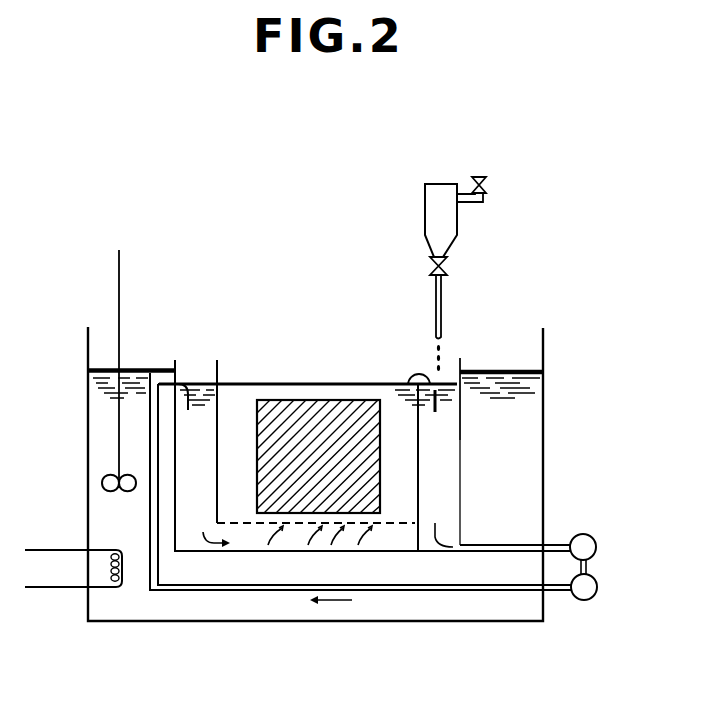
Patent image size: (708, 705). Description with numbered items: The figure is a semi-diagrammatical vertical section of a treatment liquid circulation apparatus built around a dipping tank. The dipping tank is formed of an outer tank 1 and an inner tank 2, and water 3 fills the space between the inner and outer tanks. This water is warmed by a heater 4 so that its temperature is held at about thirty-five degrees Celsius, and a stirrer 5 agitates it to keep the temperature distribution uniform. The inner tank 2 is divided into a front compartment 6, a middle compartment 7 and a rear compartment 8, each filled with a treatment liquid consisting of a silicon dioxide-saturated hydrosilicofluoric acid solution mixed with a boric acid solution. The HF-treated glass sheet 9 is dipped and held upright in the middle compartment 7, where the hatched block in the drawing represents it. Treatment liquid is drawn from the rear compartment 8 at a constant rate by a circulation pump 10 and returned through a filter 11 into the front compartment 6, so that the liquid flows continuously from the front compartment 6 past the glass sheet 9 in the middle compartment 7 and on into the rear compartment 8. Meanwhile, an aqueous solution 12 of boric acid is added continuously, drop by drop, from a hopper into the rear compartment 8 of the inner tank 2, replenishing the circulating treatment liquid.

The outer tank 1 is at (543, 402).
The inner tank 2 is at (461, 358).
The water 3 is at (525, 440).
The heater 4 is at (68, 588).
The stirrer 5 is at (119, 477).
The front compartment 6 is at (200, 437).
The middle compartment 7 is at (237, 433).
The rear compartment 8 is at (448, 478).
The glass sheet 9 is at (332, 432).
The circulation pump 10 is at (590, 546).
The filter 11 is at (585, 599).
The aqueous solution of boric acid 12 is at (435, 225).